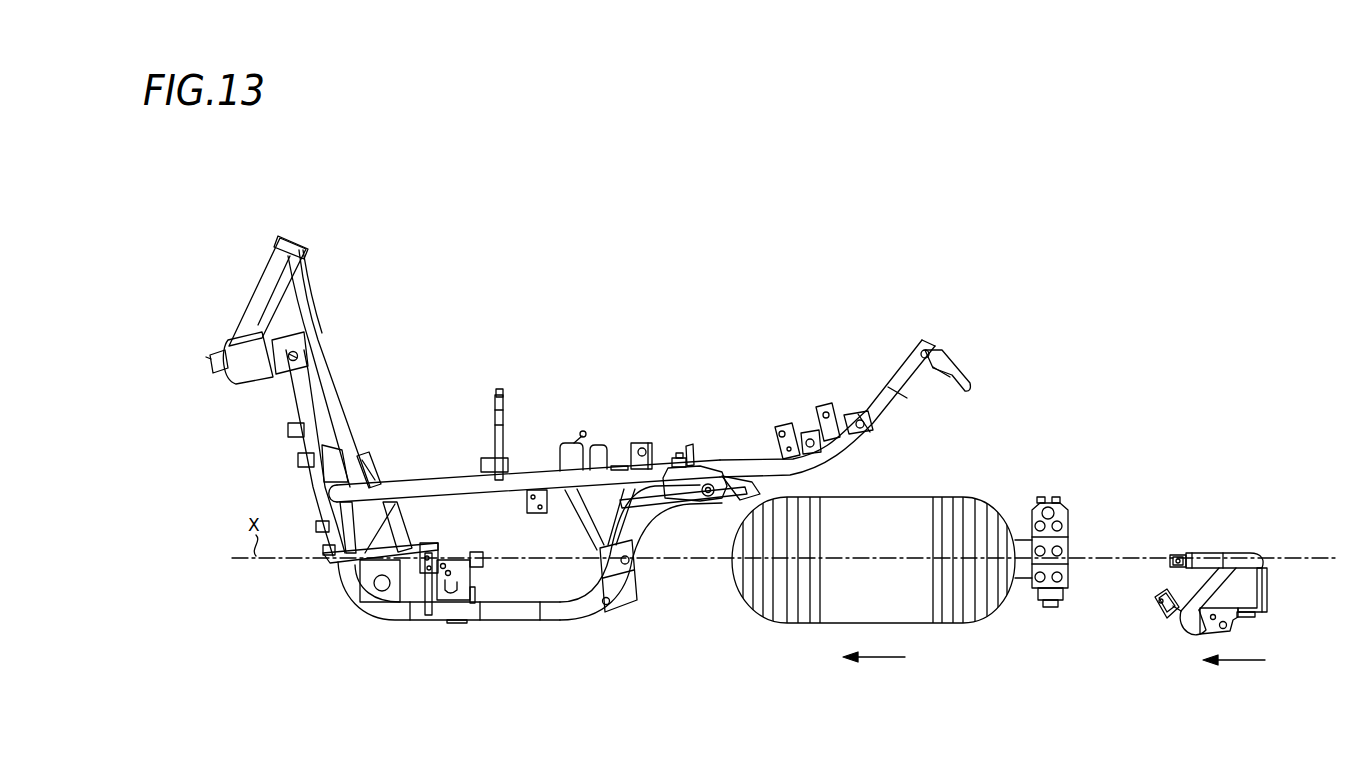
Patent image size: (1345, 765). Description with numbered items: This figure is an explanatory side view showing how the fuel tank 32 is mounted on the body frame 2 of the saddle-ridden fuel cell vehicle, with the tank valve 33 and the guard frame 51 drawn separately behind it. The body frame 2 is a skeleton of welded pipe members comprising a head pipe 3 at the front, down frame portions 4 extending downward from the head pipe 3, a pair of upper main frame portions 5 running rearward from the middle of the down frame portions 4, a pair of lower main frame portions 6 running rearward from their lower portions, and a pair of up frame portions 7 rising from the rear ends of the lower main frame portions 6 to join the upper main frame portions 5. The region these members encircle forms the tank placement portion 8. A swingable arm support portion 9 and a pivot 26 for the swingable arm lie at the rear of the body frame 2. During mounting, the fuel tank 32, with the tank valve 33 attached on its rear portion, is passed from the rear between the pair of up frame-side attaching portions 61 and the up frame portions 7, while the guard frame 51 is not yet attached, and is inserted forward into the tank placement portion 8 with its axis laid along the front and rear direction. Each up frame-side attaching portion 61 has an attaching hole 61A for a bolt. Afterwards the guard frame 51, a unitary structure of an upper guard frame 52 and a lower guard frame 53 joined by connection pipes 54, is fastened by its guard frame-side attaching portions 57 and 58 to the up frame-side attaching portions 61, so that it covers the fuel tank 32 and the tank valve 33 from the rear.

The body frame 2 is at (341, 352).
The head pipe 3 is at (268, 272).
The down frame portion 4 is at (347, 406).
The upper main frame portion 5 is at (410, 494).
The lower main frame portion 6 is at (528, 608).
The up frame portion 7 is at (613, 597).
The tank placement portion 8 is at (478, 528).
The swingable arm support portion 9 is at (745, 487).
The pivot 26 is at (714, 480).
The fuel tank 32 is at (885, 516).
The tank valve 33 is at (1060, 503).
The guard frame 51 is at (1217, 587).
The upper guard frame 52 is at (1233, 550).
The lower guard frame 53 is at (1190, 628).
The connection pipe 54 is at (1195, 580).
The guard frame-side attaching portion 57 is at (1176, 553).
The guard frame-side attaching portion 58 is at (1160, 616).
The up frame-side attaching portion 61 is at (624, 573).
The attaching hole 61A is at (630, 556).